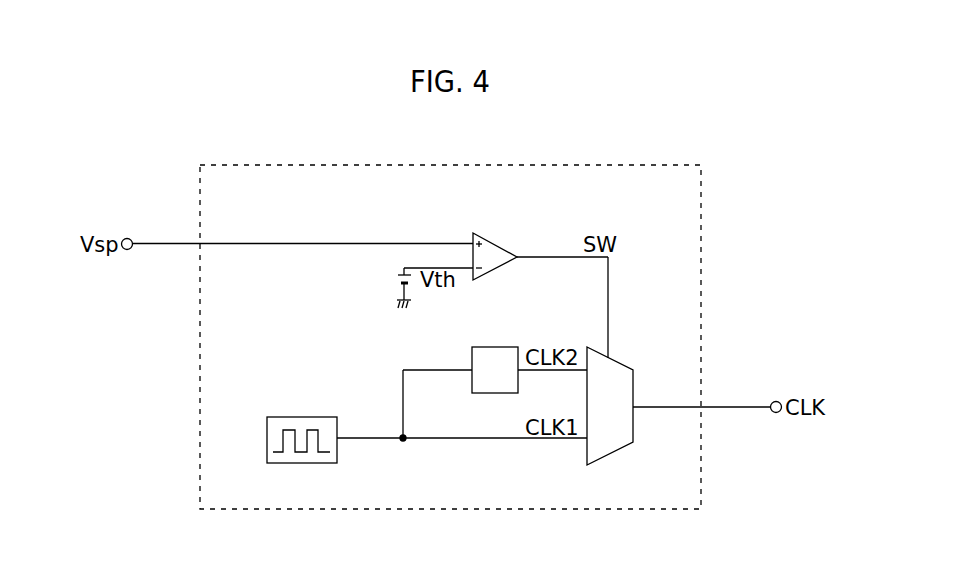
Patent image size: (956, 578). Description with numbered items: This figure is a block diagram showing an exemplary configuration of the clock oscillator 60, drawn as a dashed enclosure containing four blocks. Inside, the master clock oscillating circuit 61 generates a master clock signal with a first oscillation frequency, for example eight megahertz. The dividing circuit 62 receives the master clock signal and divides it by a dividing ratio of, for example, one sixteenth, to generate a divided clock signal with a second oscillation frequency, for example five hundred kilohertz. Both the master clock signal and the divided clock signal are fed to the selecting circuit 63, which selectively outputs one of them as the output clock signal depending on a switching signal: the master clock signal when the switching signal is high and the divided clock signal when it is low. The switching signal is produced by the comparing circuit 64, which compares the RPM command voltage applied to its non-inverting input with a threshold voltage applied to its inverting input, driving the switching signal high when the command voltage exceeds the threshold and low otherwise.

The clock oscillator 60 is at (452, 165).
The master clock oscillating circuit 61 is at (304, 415).
The dividing circuit 62 is at (495, 346).
The selecting circuit 63 is at (622, 363).
The comparing circuit 64 is at (498, 244).